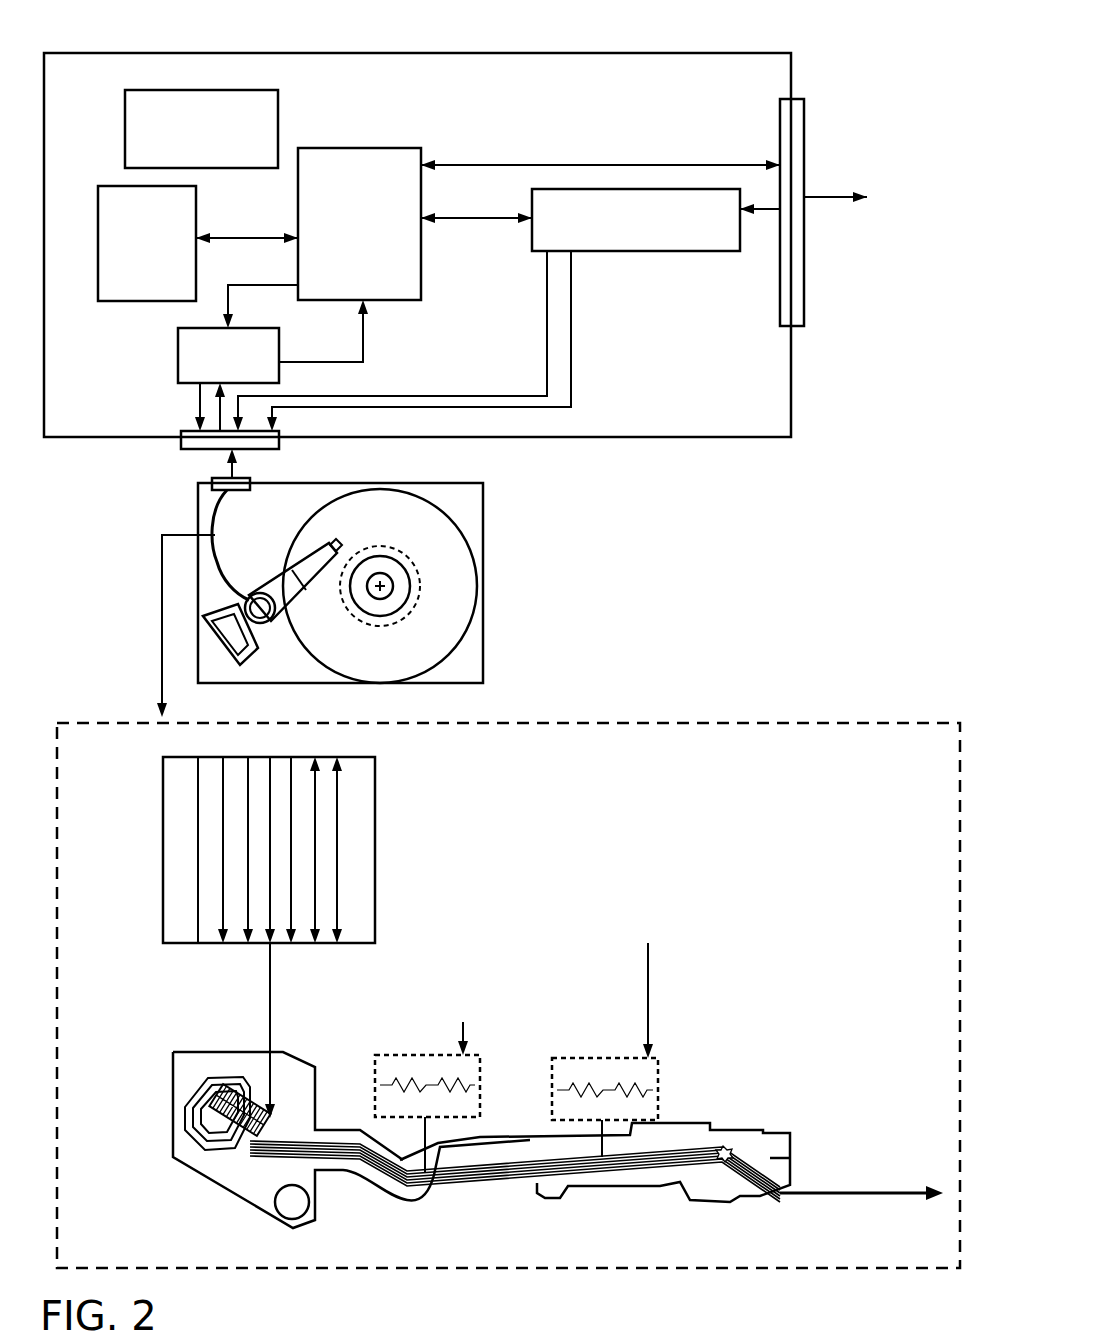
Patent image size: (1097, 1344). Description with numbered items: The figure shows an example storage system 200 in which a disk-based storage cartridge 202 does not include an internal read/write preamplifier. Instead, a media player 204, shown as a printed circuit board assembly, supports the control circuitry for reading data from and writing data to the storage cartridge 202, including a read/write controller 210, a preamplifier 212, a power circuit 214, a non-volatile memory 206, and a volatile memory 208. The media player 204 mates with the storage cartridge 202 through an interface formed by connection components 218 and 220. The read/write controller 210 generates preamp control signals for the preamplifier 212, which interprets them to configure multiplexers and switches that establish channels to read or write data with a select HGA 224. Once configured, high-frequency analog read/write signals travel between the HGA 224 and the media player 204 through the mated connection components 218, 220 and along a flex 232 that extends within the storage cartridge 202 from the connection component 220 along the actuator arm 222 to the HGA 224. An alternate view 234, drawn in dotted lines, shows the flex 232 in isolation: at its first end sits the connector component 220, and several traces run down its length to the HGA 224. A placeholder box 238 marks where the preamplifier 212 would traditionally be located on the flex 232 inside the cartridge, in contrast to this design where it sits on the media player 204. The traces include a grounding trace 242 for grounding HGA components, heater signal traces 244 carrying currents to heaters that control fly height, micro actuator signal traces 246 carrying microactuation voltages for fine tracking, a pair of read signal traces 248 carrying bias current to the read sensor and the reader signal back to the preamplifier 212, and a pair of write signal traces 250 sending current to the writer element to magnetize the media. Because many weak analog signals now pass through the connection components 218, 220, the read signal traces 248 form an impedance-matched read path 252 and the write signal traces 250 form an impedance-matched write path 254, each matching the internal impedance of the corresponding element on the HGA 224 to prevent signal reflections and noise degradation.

The storage system 200 is at (866, 92).
The disk-based storage cartridge 202 is at (483, 653).
The media player 204 is at (478, 245).
The non-volatile memory 206 is at (201, 129).
The volatile memory 208 is at (147, 243).
The read/write controller 210 is at (359, 224).
The preamplifier 212 is at (228, 355).
The power circuit 214 is at (636, 220).
The connection component 218 is at (279, 441).
The connection component 220 is at (208, 485).
The actuator arm 222 is at (300, 597).
The HGA 224 is at (336, 546).
The flex 232 is at (215, 582).
The alternate view 234 is at (508, 995).
The placeholder box 238 is at (740, 1142).
The grounding trace 242 is at (198, 810).
The heater signal trace 244 is at (250, 858).
The micro actuator signal traces 246 is at (270, 827).
The read signal traces 248 is at (317, 892).
The write signal traces 250 is at (345, 920).
The impedance-matched read path 252 is at (480, 1063).
The impedance-matched write path 254 is at (658, 1080).